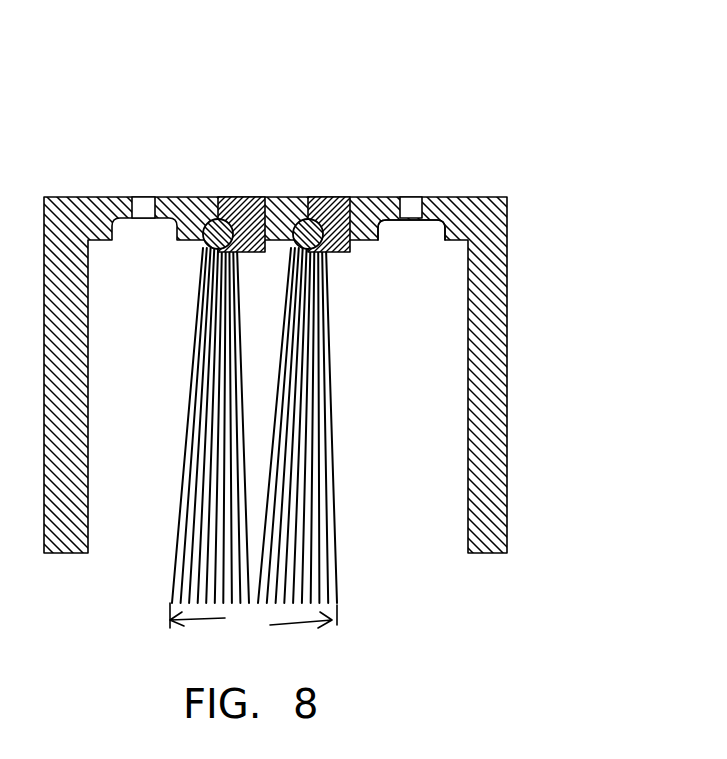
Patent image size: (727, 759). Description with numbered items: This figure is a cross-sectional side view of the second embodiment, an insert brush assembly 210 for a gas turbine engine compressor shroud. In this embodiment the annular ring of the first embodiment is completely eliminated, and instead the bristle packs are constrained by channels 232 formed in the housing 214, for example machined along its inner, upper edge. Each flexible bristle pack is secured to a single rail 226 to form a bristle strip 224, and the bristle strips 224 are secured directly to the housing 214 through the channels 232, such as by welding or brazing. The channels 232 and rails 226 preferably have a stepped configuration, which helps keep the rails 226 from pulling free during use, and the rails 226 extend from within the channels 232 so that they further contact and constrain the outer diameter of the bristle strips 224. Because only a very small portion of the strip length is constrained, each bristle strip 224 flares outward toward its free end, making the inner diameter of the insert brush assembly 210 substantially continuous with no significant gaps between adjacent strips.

The insert brush assembly 210 is at (117, 108).
The housing 214 is at (507, 212).
The bristle strips 224 is at (180, 302).
The rail 226 is at (236, 198).
The channels 232 is at (402, 227).